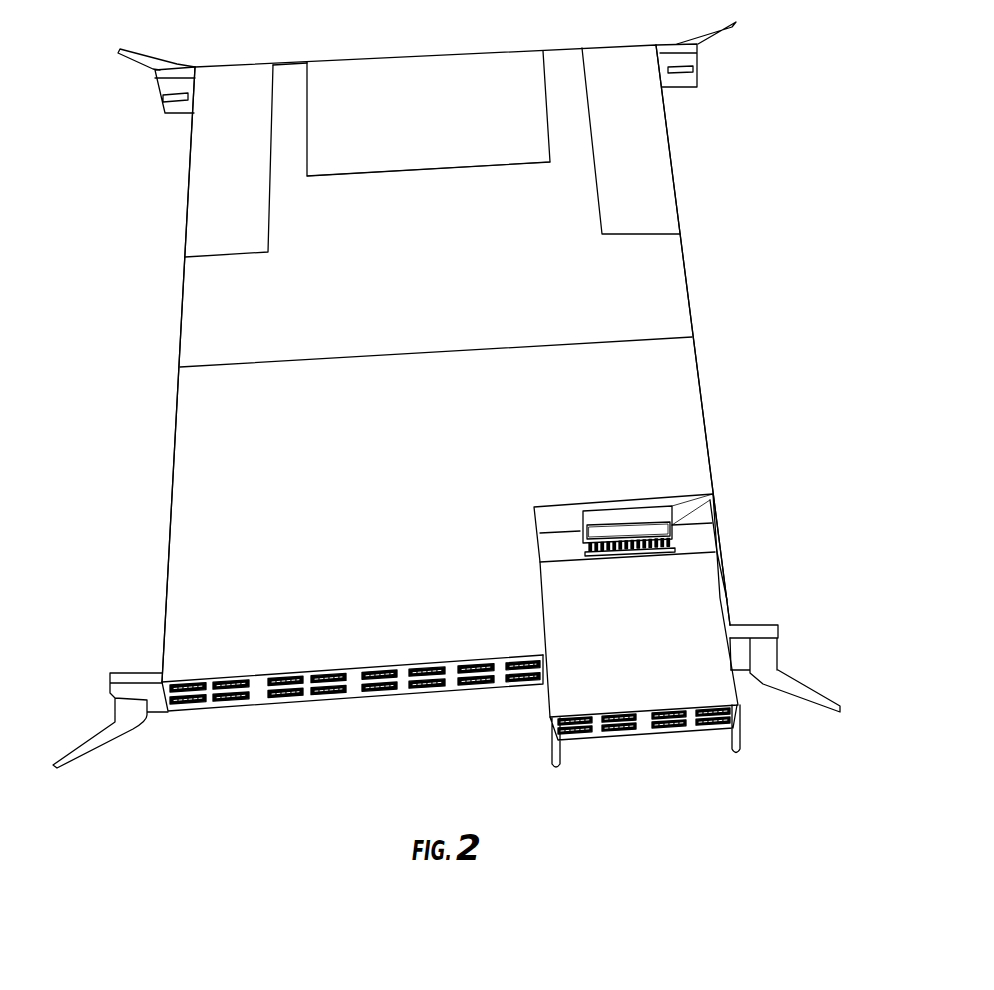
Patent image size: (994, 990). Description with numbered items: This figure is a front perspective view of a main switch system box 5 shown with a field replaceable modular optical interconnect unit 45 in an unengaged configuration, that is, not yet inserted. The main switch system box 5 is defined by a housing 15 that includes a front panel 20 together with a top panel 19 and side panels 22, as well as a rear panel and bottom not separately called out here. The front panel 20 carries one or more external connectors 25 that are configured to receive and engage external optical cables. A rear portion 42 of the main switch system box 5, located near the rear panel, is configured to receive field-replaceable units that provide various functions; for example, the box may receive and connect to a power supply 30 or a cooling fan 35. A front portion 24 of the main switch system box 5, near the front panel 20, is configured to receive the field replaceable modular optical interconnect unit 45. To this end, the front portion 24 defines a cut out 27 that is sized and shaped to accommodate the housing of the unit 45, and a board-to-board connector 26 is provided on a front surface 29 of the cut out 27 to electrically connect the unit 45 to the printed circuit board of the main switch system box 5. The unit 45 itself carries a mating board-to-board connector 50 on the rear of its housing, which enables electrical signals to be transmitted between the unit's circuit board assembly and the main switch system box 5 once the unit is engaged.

The main switch system box 5 is at (676, 155).
The housing 15 is at (648, 317).
The top panel 19 is at (510, 258).
The front panel 20 is at (258, 705).
The side panels 22 is at (180, 333).
The front portion 24 is at (216, 617).
The external connectors 25 is at (335, 682).
The board-to-board connector 26 is at (642, 520).
The cut out 27 is at (553, 543).
The front surface 29 is at (557, 515).
The power supply 30 is at (222, 197).
The cooling fan 35 is at (412, 77).
The rear portion 42 is at (295, 86).
The field replaceable modular optical interconnect unit 45 is at (694, 597).
The board-to-board connector 50 is at (670, 513).